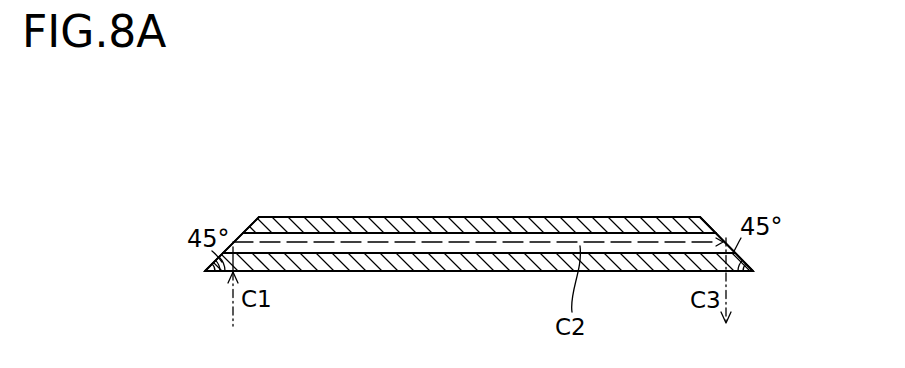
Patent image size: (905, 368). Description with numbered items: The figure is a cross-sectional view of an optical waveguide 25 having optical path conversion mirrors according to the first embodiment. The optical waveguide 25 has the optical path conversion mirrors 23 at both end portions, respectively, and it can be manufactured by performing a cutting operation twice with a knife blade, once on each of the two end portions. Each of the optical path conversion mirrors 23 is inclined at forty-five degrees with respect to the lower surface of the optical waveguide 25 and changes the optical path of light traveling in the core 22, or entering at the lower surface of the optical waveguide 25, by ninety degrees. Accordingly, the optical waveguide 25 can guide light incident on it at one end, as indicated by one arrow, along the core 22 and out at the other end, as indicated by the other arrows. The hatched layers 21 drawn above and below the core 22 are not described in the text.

The substrate plate 21 is at (463, 265).
The core 22 is at (541, 238).
The optical path conversion mirror 23 is at (236, 241).
The optical waveguide 25 is at (200, 199).